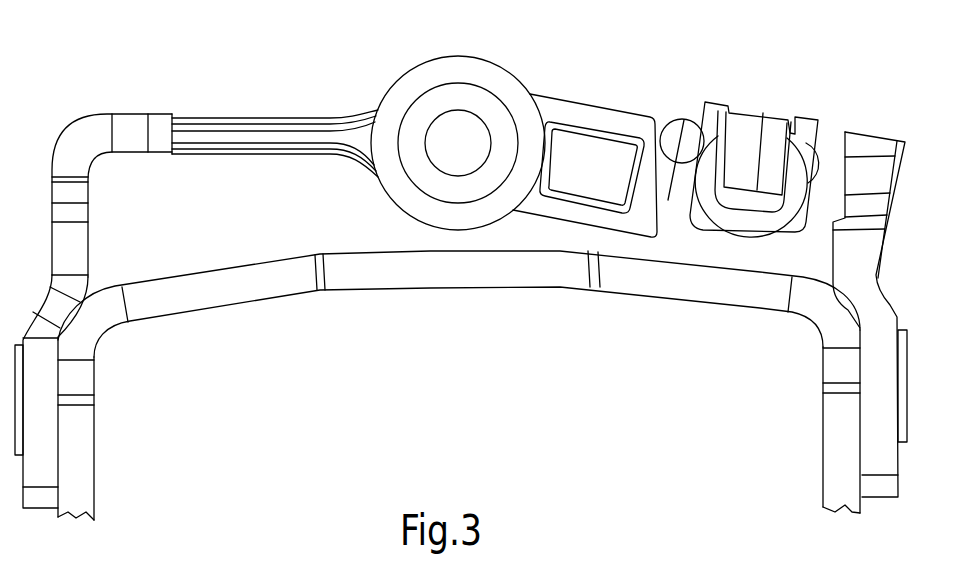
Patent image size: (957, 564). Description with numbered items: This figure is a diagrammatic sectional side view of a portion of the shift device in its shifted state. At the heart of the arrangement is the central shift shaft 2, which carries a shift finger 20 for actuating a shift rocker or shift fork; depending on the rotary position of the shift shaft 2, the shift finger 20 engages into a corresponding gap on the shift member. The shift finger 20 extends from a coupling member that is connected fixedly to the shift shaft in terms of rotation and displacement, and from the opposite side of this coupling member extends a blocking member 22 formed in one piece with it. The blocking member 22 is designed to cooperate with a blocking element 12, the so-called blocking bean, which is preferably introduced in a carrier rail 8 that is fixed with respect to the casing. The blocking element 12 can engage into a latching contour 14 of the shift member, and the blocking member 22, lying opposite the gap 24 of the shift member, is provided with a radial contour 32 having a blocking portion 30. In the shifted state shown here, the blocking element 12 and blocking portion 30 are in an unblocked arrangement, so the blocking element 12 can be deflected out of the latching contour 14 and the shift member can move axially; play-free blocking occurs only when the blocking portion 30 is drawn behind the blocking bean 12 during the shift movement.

The central shift shaft 2 is at (423, 172).
The carrier rail 8 is at (720, 115).
The blocking element (blocking bean) 12 is at (828, 138).
The latching contour 14 is at (838, 140).
The shift finger 20 is at (180, 137).
The blocking member 22 is at (642, 212).
The gap of the shift member 24 is at (82, 480).
The blocking portion 30 is at (668, 200).
The radial contour 32 is at (669, 113).